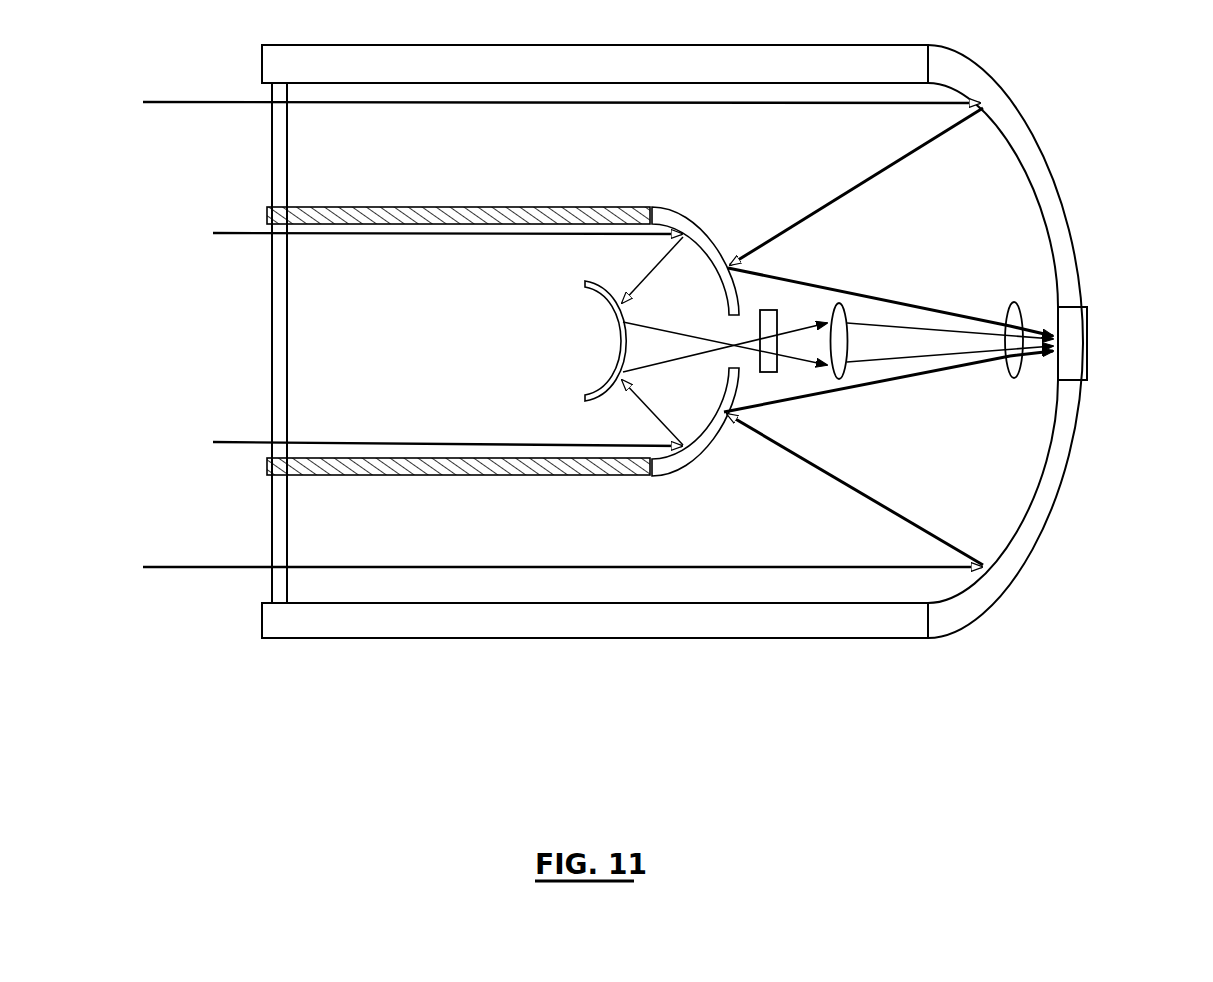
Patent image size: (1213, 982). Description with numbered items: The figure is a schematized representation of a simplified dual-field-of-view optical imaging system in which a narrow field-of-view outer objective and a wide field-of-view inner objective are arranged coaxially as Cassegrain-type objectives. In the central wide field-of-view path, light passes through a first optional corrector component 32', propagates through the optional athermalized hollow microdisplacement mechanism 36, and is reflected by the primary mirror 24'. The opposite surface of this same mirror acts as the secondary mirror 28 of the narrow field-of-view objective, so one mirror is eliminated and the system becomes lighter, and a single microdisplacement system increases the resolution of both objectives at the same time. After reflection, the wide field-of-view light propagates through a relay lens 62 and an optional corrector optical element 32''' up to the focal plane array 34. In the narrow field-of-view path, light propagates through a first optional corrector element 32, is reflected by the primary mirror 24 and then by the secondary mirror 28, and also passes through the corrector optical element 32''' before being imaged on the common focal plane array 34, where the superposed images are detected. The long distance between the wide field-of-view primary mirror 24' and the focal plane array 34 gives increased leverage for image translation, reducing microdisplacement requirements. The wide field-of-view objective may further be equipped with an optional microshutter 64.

The primary mirror 24 is at (697, 341).
The primary mirror 24' is at (739, 367).
The secondary mirror 28 is at (739, 367).
The first optional corrector element 32 is at (348, 343).
The first optional corrector component 32' is at (348, 343).
The optional corrector optical element 32''' is at (1009, 372).
The focal plane array 34 is at (1080, 348).
The hollow microdisplacement mechanism 36 is at (460, 207).
The relay lens 62 is at (838, 378).
The microshutter 64 is at (770, 372).